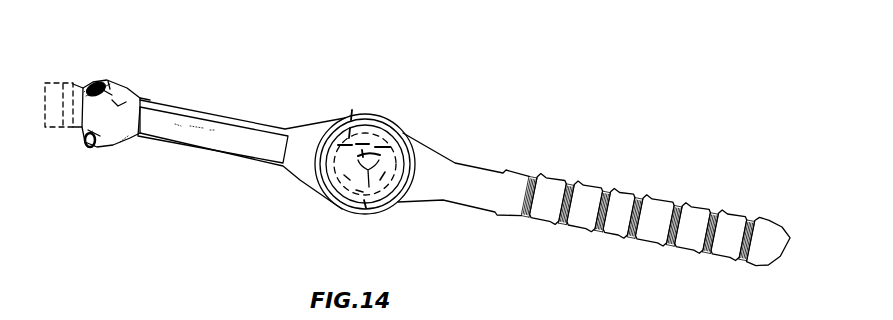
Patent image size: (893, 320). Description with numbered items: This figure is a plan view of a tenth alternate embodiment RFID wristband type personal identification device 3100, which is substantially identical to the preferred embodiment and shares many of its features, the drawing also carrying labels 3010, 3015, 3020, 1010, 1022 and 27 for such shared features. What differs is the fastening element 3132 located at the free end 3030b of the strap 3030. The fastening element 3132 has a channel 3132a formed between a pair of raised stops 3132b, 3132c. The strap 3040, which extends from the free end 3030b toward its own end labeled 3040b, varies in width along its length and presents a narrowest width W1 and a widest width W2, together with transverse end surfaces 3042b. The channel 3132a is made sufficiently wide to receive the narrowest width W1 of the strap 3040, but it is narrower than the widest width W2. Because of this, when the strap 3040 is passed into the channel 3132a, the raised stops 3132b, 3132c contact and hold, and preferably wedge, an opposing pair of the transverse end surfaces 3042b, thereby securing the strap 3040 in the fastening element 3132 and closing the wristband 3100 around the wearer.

The RFID wristband type personal identification device 3100 is at (672, 80).
The handle 3010 is at (241, 156).
The neck portion 3015 is at (463, 190).
The ring portion 3020 is at (312, 165).
The strap 3030 is at (260, 123).
The free end 3030b is at (131, 83).
The strap 3040 is at (622, 196).
The shaft distal end 3040b is at (780, 227).
The transverse end surfaces 3042b is at (677, 273).
The narrowest width W1 is at (629, 196).
The widest width W2 is at (688, 203).
The fastening element 3132 is at (108, 81).
The channel 3132a is at (98, 107).
The raised stop 3132b is at (93, 83).
The raised stop 3132c is at (88, 147).
The fastener 1010 is at (371, 139).
The fastener axis 1022 is at (354, 104).
The axis 27 is at (362, 217).